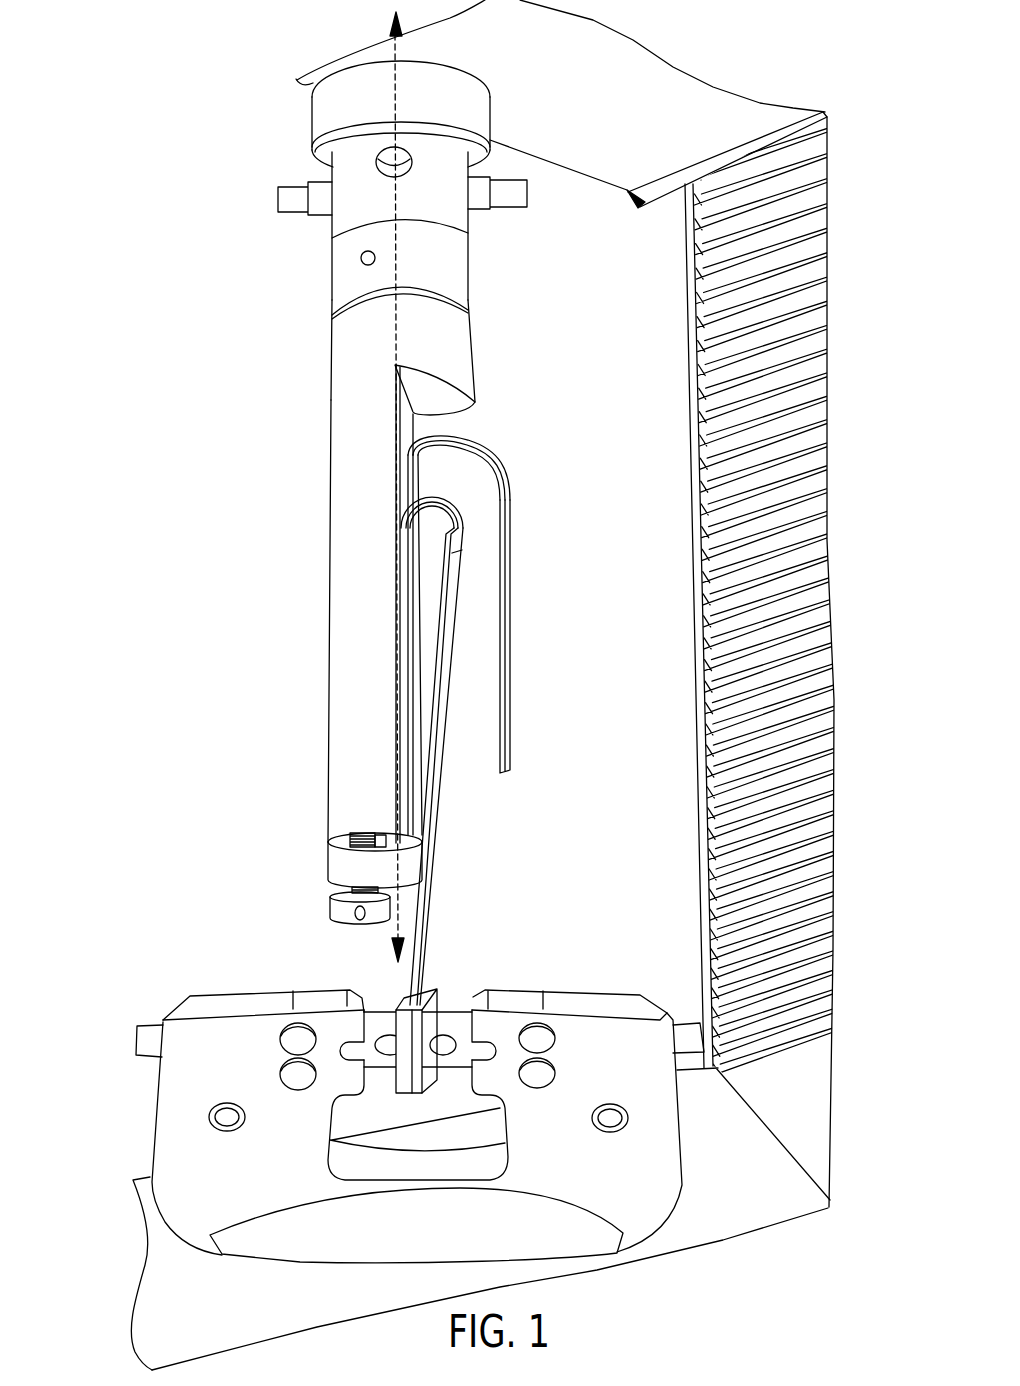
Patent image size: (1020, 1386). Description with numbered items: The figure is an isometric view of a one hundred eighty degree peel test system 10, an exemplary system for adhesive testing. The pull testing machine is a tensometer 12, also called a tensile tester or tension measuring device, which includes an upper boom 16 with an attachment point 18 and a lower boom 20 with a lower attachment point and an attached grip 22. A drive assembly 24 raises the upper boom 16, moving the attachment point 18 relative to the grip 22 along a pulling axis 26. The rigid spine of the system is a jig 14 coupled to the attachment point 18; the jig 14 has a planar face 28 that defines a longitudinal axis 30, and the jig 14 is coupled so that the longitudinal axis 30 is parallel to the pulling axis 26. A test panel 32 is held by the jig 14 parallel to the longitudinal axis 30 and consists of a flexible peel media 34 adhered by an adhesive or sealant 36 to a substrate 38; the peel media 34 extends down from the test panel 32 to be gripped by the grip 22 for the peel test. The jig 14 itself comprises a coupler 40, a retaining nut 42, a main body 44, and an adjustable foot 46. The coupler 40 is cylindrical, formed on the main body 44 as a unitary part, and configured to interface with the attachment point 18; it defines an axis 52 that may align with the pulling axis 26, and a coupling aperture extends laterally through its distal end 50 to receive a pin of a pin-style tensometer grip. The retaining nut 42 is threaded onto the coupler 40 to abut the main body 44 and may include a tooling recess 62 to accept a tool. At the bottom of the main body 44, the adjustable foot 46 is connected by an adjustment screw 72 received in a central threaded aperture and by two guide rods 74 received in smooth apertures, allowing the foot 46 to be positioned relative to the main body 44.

The peel test system 10 is at (122, 175).
The tensometer 12 is at (822, 976).
The jig 14 is at (343, 381).
The upper boom 16 is at (684, 104).
The attachment point 18 is at (322, 107).
The lower boom 20 is at (770, 1196).
The grip 22 is at (162, 1126).
The drive assembly 24 is at (806, 228).
The pulling axis 26 is at (401, 22).
The face 28 is at (392, 476).
The longitudinal axis 30 is at (398, 325).
The test panel 32 is at (412, 800).
The flexible peel media 34 is at (448, 595).
The adhesive or sealant 36 is at (452, 503).
The substrate 38 is at (414, 446).
The coupler 40 is at (466, 198).
The retaining nut 42 is at (459, 226).
The main body 44 is at (330, 641).
The adjustable foot 46 is at (343, 866).
The distal end 50 is at (326, 156).
The axis 52 is at (399, 74).
The tooling recess 62 is at (366, 262).
The adjustment screw 72 is at (343, 838).
The guide rods 74 is at (361, 830).